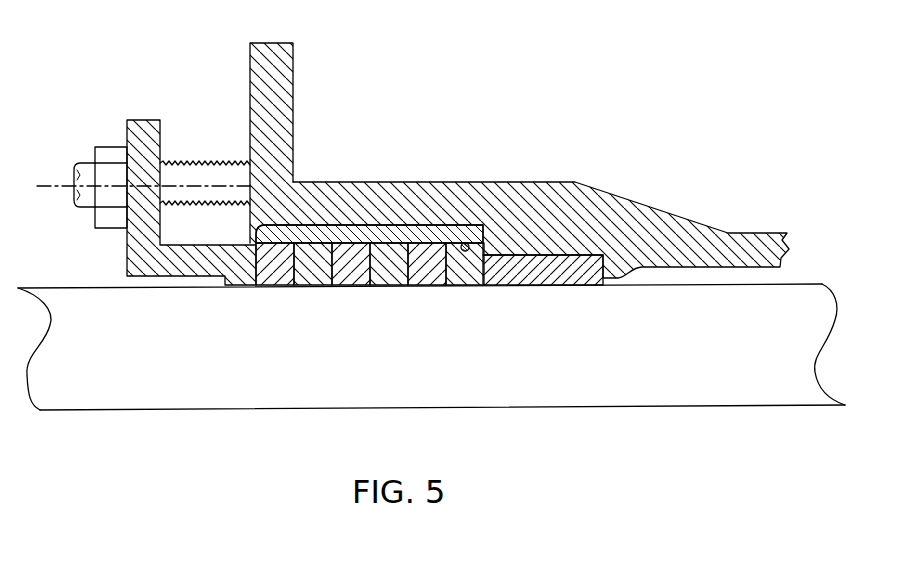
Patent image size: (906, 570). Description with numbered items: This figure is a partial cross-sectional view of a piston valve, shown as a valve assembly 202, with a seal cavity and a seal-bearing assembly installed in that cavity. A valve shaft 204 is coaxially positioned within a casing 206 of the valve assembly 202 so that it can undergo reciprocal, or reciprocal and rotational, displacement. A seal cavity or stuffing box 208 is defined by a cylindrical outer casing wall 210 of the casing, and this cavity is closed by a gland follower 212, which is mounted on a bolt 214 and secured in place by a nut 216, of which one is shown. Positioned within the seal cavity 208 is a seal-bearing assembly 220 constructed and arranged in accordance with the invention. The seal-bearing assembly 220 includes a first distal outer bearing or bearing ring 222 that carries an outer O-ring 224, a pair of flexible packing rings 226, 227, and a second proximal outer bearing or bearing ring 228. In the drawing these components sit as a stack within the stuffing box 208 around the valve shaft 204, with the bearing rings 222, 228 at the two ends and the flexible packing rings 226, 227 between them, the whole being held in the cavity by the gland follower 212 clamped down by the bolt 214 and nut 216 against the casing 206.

The valve assembly 202 is at (519, 160).
The valve shaft 204 is at (120, 388).
The casing 206 is at (277, 117).
The seal cavity 208 is at (345, 314).
The cylindrical outer casing wall 210 is at (323, 197).
The gland follower 212 is at (130, 248).
The bolt 214 is at (195, 174).
The nut 216 is at (102, 150).
The seal-bearing assembly 220 is at (380, 225).
The first distal outer bearing ring 222 is at (468, 252).
The outer O-ring 224 is at (484, 283).
The flexible packing ring 226 is at (310, 277).
The flexible packing ring 227 is at (345, 277).
The second proximal outer bearing ring 228 is at (268, 277).